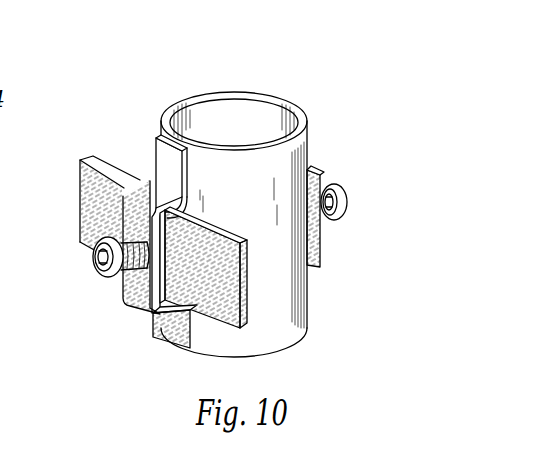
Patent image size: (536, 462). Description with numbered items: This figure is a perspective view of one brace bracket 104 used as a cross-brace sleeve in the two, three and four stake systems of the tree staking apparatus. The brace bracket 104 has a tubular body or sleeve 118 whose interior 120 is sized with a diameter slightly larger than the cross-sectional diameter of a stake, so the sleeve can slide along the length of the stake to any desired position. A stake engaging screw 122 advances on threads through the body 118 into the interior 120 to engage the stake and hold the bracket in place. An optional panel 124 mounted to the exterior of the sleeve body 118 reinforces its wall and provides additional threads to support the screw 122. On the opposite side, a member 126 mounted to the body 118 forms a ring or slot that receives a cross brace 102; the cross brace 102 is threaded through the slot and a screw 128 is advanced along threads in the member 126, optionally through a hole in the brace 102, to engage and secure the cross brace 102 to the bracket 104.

The cross brace 102 is at (82, 198).
The brace bracket 104 is at (203, 192).
The tubular body 118 is at (306, 337).
The interior 120 is at (232, 106).
The stake engaging screw 122 is at (332, 182).
The panel 124 is at (313, 229).
The member 126 is at (147, 187).
The screw 128 is at (114, 271).